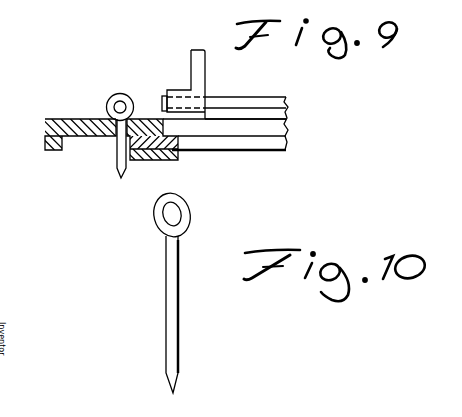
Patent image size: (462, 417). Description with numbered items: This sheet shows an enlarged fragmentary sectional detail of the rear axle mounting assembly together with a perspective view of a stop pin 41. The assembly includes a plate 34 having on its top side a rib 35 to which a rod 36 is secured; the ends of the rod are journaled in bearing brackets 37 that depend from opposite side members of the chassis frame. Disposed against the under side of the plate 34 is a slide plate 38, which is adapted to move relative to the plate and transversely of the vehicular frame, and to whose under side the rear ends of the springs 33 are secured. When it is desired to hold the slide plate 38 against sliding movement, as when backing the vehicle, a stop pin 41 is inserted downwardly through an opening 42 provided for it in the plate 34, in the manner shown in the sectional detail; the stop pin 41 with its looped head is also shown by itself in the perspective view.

In FIG. 9, the springs 33 is at (148, 162).
In FIG. 9, the plate 34 is at (287, 128).
In FIG. 9, the rib 35 is at (240, 111).
In FIG. 9, the rod 36 is at (286, 99).
In FIG. 9, the bearing bracket 37 is at (205, 88).
In FIG. 9, the slide plate 38 is at (263, 150).
In FIG. 9, the stop pin 41 is at (124, 96).
In FIG. 10, the stop pin 41 is at (166, 297).
In FIG. 9, the opening 42 is at (108, 120).